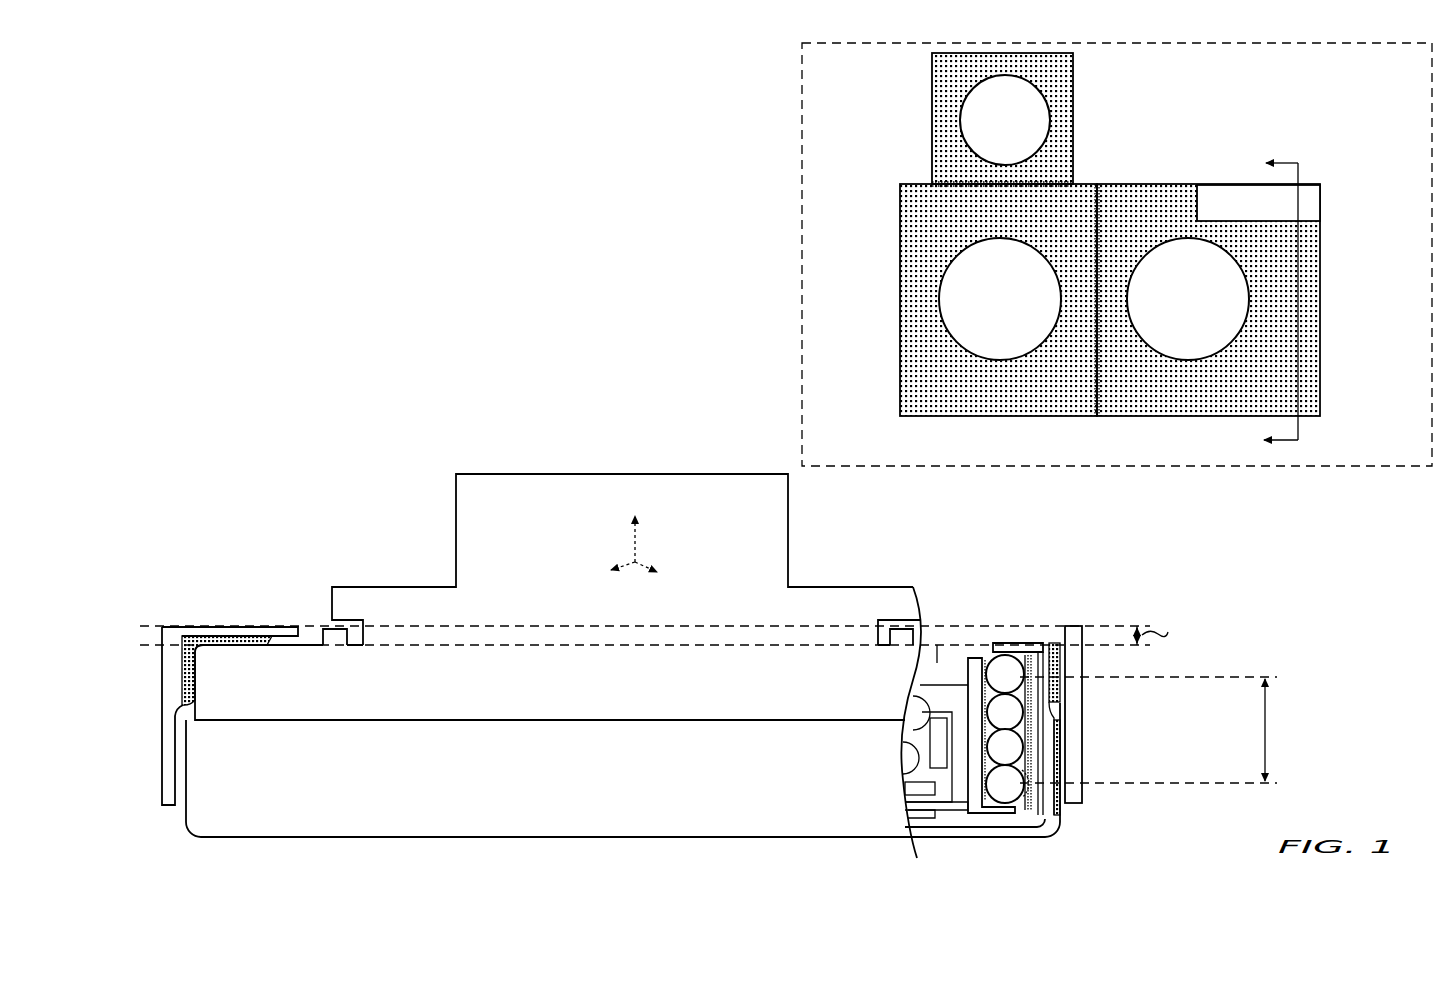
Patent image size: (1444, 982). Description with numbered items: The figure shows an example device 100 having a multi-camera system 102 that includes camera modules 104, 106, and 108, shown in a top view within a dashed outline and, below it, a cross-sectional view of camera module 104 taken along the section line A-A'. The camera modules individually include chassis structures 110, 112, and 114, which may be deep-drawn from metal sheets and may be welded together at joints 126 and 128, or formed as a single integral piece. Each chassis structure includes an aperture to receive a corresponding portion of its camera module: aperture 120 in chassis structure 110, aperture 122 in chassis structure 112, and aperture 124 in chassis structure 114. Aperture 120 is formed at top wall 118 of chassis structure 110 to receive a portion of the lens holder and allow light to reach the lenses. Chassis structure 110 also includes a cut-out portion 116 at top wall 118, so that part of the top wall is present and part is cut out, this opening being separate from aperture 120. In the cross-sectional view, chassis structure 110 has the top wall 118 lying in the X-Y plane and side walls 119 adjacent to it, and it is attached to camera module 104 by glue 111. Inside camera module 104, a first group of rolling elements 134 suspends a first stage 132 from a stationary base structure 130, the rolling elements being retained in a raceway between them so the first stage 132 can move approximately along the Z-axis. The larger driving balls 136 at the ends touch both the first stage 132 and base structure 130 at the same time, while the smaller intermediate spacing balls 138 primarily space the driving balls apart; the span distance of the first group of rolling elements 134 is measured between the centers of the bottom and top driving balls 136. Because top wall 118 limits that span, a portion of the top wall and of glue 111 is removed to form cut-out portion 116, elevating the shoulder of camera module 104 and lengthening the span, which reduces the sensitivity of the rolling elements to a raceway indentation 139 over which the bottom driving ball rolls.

The device 100 is at (566, 57).
The multi-camera system 102 is at (801, 82).
The camera module 104 is at (1330, 352).
The camera module 106 is at (958, 300).
The camera module 108 is at (958, 118).
The chassis structure 110 is at (692, 494).
The glue 111 is at (263, 648).
The chassis structure 112 is at (998, 300).
The chassis structure 114 is at (1002, 118).
The cut-out portion 116 is at (1320, 205).
The top wall 118 is at (195, 627).
The side wall 119 is at (162, 672).
The aperture 120 is at (1188, 299).
The aperture 122 is at (1000, 299).
The aperture 124 is at (1005, 120).
The joint 126 is at (1101, 203).
The joint 128 is at (938, 186).
The base structure 130 is at (1040, 648).
The first stage 132 is at (975, 812).
The first group of rolling elements 134 is at (1188, 724).
The driving balls 136 is at (998, 668).
The spacing balls 138 is at (1005, 713).
The indentation 139 is at (1033, 785).